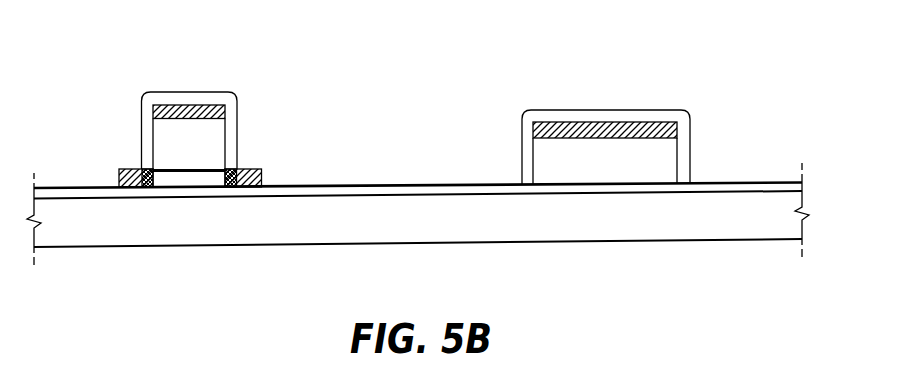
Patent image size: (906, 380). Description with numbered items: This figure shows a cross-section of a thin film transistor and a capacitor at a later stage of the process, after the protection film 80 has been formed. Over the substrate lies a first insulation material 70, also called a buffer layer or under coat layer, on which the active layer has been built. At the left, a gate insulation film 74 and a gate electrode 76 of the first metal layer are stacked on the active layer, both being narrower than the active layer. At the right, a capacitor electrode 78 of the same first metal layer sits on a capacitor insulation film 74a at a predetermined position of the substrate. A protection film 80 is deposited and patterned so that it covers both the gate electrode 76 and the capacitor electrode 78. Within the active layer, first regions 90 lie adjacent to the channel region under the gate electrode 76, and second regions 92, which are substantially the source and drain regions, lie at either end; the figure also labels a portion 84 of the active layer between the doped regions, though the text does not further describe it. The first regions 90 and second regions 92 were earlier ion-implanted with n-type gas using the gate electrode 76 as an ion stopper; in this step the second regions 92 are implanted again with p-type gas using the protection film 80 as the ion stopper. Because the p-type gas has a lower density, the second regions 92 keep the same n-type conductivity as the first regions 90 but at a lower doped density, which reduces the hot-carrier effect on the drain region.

The first insulation material 70 is at (793, 185).
The gate insulation film 74 is at (162, 144).
The capacitor insulation film 74a is at (670, 157).
The gate electrode 76 is at (148, 103).
The capacitor electrode 78 is at (625, 121).
The protection film 80 is at (183, 97).
The gap region 84 is at (195, 182).
The first regions 90 is at (147, 187).
The second regions 92 is at (127, 187).